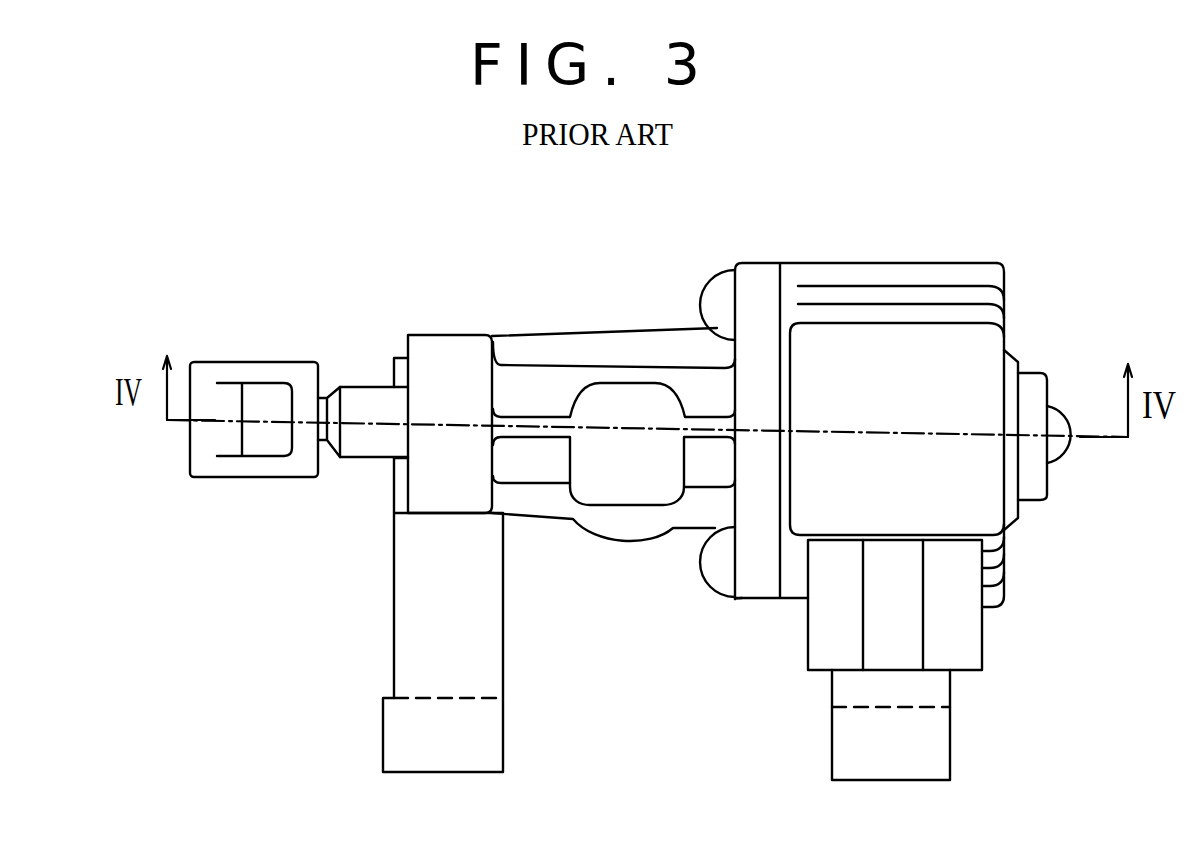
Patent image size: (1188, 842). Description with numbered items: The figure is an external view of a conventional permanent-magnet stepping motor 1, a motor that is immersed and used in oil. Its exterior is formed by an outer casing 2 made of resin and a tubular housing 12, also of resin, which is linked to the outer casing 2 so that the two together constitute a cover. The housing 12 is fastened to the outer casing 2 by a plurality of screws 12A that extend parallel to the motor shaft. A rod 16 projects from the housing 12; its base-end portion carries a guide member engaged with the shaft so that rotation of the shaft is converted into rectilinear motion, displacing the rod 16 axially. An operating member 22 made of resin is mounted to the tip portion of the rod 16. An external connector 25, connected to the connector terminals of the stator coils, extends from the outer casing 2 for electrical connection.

The permanent-magnet stepping motor 1 is at (959, 249).
The outer casing 2 is at (1006, 289).
The housing 12 is at (546, 333).
The screws 12A is at (716, 286).
The rod 16 is at (381, 387).
The operating member 22 is at (293, 362).
The external connector 25 is at (970, 641).